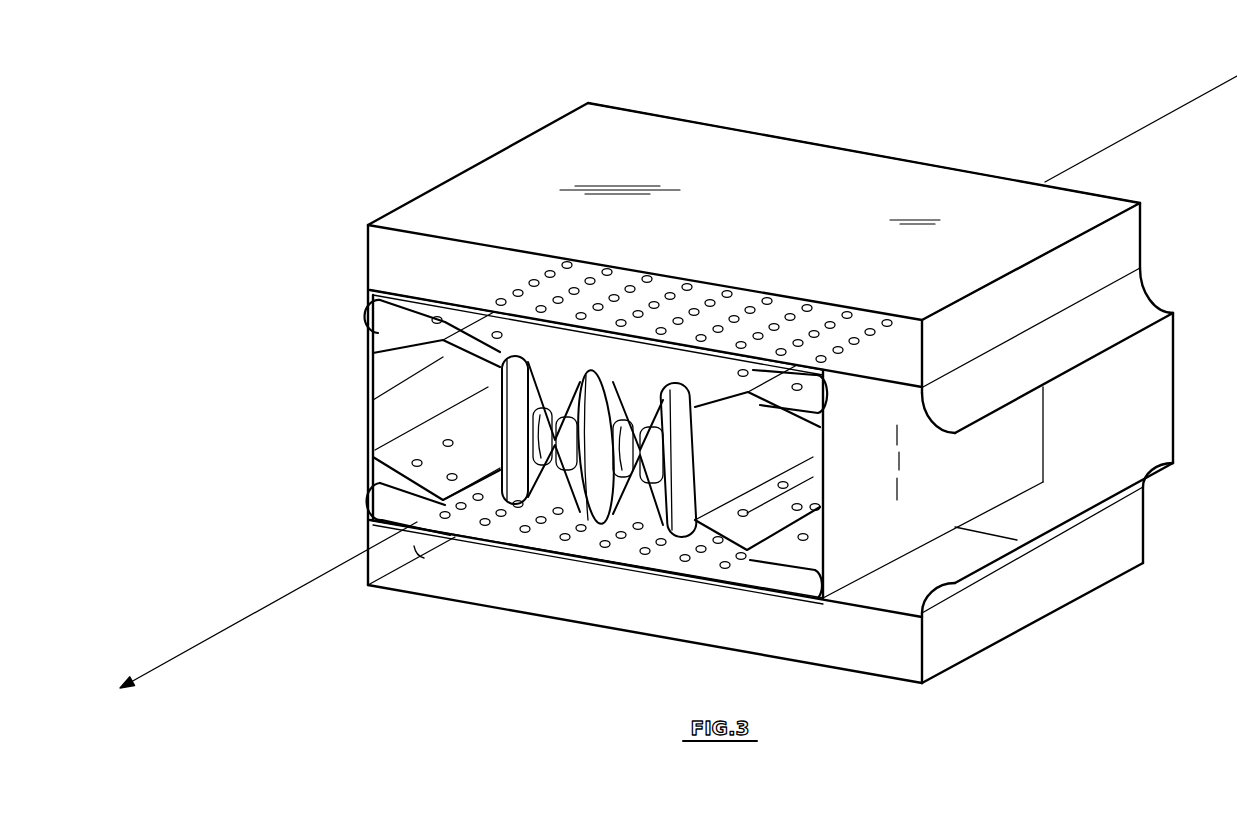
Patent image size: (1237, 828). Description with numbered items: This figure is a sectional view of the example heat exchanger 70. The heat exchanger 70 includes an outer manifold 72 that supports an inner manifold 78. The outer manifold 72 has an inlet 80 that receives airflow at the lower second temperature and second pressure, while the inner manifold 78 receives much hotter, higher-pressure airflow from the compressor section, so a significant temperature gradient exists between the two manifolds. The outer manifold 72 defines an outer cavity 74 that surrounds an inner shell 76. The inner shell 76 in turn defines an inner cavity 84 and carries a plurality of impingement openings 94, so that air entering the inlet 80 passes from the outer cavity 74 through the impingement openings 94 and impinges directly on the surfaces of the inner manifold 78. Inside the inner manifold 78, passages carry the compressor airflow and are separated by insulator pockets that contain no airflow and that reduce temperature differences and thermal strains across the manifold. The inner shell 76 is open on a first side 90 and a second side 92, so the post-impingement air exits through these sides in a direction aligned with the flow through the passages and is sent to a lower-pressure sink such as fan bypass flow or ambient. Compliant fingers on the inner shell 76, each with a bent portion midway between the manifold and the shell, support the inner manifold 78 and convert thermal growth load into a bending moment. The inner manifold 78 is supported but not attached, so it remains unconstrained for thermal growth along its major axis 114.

The heat exchanger 70 is at (770, 359).
The outer manifold 72 is at (620, 137).
The outer cavity 74 is at (631, 439).
The inner shell 76 is at (790, 580).
The inner manifold 78 is at (560, 492).
The inlet 80 is at (1143, 428).
The inner cavity 84 is at (707, 563).
The first side 90 is at (1152, 235).
The second side 92 is at (332, 410).
The impingement openings 94 is at (500, 303).
The major axis 114 is at (215, 652).